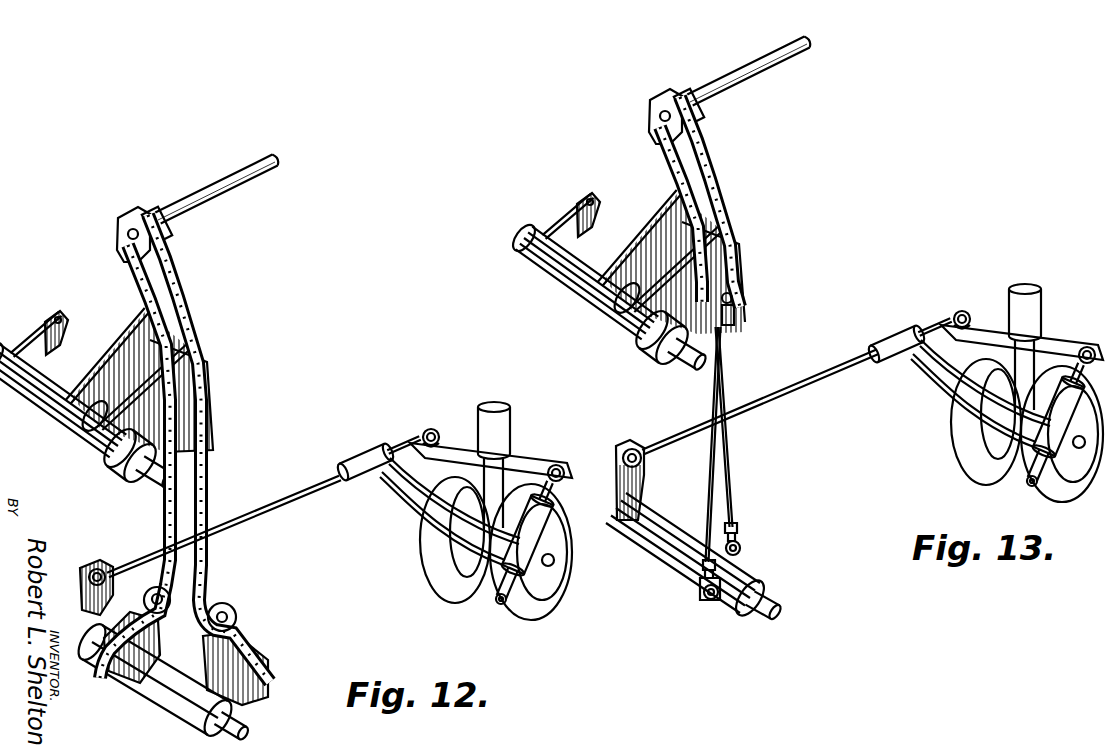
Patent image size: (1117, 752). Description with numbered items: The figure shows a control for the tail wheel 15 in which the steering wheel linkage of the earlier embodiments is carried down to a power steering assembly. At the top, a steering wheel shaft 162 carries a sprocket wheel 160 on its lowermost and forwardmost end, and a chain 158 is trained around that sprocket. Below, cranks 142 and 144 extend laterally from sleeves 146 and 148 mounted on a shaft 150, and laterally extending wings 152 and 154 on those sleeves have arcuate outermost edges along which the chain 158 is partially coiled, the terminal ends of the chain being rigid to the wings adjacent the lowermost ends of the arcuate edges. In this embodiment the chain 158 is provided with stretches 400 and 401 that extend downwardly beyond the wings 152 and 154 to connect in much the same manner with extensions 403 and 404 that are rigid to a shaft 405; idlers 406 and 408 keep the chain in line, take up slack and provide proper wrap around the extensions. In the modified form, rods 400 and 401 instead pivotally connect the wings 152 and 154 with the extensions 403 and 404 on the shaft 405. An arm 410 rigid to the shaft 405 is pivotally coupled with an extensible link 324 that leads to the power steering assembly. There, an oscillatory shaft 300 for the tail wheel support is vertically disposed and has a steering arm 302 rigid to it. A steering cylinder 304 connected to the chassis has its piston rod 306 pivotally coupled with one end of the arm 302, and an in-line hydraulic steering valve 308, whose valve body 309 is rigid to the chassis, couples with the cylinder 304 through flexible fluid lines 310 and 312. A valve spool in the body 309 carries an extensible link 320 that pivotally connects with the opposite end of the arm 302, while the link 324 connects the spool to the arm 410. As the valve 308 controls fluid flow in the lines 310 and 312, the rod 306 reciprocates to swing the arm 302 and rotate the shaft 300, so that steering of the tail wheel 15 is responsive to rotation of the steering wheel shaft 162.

In FIG. 12, the tail wheel 15 is at (570, 589).
In FIG. 13, the tail wheel 15 is at (1004, 430).
In FIG. 12, the crank 142 is at (45, 335).
In FIG. 13, the crank 142 is at (571, 208).
In FIG. 12, the crank 144 is at (78, 430).
In FIG. 13, the crank 144 is at (581, 292).
In FIG. 12, the sleeve 146 is at (22, 402).
In FIG. 13, the sleeve 146 is at (575, 274).
In FIG. 12, the sleeve 148 is at (117, 472).
In FIG. 13, the sleeve 148 is at (633, 324).
In FIG. 12, the shaft 150 is at (165, 488).
In FIG. 13, the shaft 150 is at (678, 366).
In FIG. 12, the wing 152 is at (118, 348).
In FIG. 13, the wing 152 is at (660, 251).
In FIG. 12, the wing 154 is at (210, 378).
In FIG. 13, the wing 154 is at (701, 262).
In FIG. 12, the chain 158 is at (192, 322).
In FIG. 13, the chain 158 is at (718, 202).
In FIG. 12, the sprocket wheel 160 is at (122, 234).
In FIG. 13, the sprocket wheel 160 is at (643, 112).
In FIG. 12, the steering wheel shaft 162 is at (262, 182).
In FIG. 13, the steering wheel shaft 162 is at (752, 81).
In FIG. 12, the oscillatory shaft 300 is at (486, 488).
In FIG. 13, the oscillatory shaft 300 is at (994, 347).
In FIG. 12, the steering arm 302 is at (522, 462).
In FIG. 13, the steering arm 302 is at (1022, 329).
In FIG. 12, the steering cylinder 304 is at (552, 533).
In FIG. 13, the steering cylinder 304 is at (1063, 441).
In FIG. 12, the piston rod 306 is at (563, 477).
In FIG. 13, the piston rod 306 is at (1091, 339).
In FIG. 12, the hydraulic steering valve 308 is at (350, 458).
In FIG. 13, the hydraulic steering valve 308 is at (884, 334).
In FIG. 12, the valve body 309 is at (378, 442).
In FIG. 13, the valve body 309 is at (922, 320).
In FIG. 12, the flexible fluid line 310 is at (430, 540).
In FIG. 13, the flexible fluid line 310 is at (972, 400).
In FIG. 12, the flexible fluid line 312 is at (386, 495).
In FIG. 13, the flexible fluid line 312 is at (970, 383).
In FIG. 12, the extensible link 320 is at (425, 437).
In FIG. 13, the extensible link 320 is at (960, 300).
In FIG. 12, the extensible link 324 is at (318, 504).
In FIG. 13, the extensible link 324 is at (795, 392).
In FIG. 12, the chain stretch 400 is at (164, 540).
In FIG. 13, the chain stretch 400 is at (733, 490).
In FIG. 12, the chain stretch 401 is at (210, 562).
In FIG. 13, the chain stretch 401 is at (725, 466).
In FIG. 12, the extension 403 is at (124, 676).
In FIG. 13, the extension 403 is at (740, 530).
In FIG. 12, the extension 404 is at (250, 695).
In FIG. 13, the extension 404 is at (715, 612).
In FIG. 12, the shaft 405 is at (180, 715).
In FIG. 13, the shaft 405 is at (672, 558).
In FIG. 12, the idler 406 is at (146, 606).
In FIG. 12, the idler 408 is at (237, 612).
In FIG. 12, the arm 410 is at (82, 572).
In FIG. 13, the arm 410 is at (640, 468).